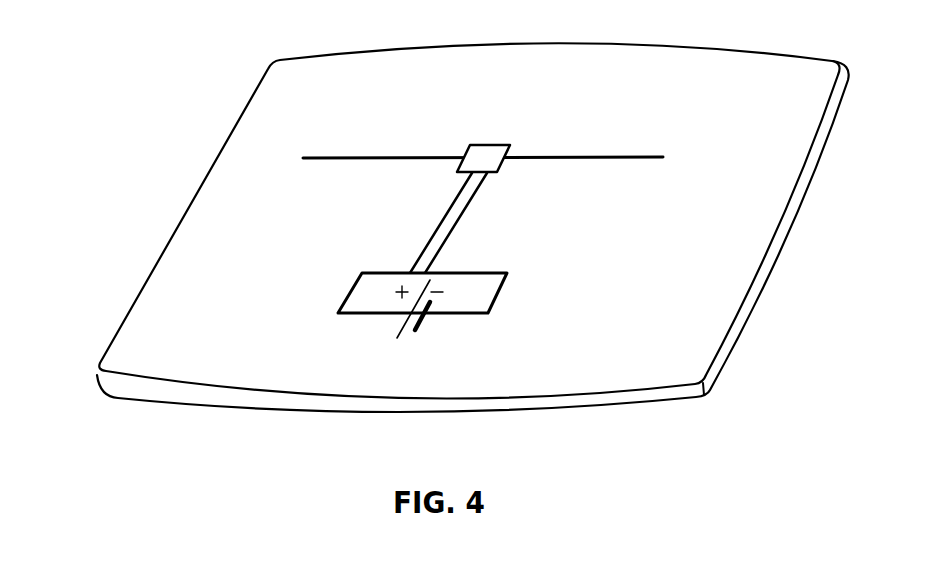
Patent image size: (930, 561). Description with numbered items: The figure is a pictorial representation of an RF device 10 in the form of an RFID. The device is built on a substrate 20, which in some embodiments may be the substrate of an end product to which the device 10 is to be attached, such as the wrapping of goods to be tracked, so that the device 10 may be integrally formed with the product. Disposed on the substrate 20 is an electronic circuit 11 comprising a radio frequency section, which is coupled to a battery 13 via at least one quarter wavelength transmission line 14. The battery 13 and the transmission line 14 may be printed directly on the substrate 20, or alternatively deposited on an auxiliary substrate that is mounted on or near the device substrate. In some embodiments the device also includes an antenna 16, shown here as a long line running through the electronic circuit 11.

The RF device 10 is at (128, 252).
The electronic circuit 11 is at (487, 144).
The battery 13 is at (423, 323).
The quarter wavelength transmission line 14 is at (462, 233).
The antenna 16 is at (604, 158).
The substrate 20 is at (567, 389).